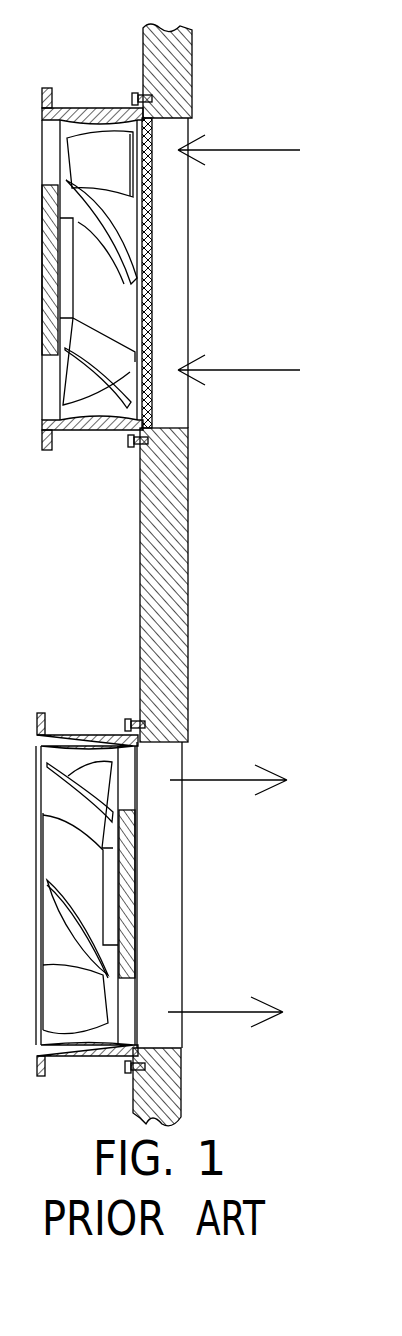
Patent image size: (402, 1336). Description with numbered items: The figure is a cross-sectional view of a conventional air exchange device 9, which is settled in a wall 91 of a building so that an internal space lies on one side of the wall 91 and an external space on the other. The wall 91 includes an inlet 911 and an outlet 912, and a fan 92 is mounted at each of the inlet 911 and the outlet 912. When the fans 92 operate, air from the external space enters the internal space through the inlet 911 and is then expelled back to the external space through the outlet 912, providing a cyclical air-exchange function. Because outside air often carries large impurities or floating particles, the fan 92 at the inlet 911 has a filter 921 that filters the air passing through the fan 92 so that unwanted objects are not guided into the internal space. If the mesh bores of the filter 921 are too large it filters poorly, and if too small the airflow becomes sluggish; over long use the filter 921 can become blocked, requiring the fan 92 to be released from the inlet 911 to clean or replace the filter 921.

The air exchange device 9 is at (212, 94).
The wall 91 is at (170, 578).
The inlet 911 is at (178, 270).
The outlet 912 is at (178, 908).
The fan 92 is at (88, 108).
The filter 921 is at (153, 212).